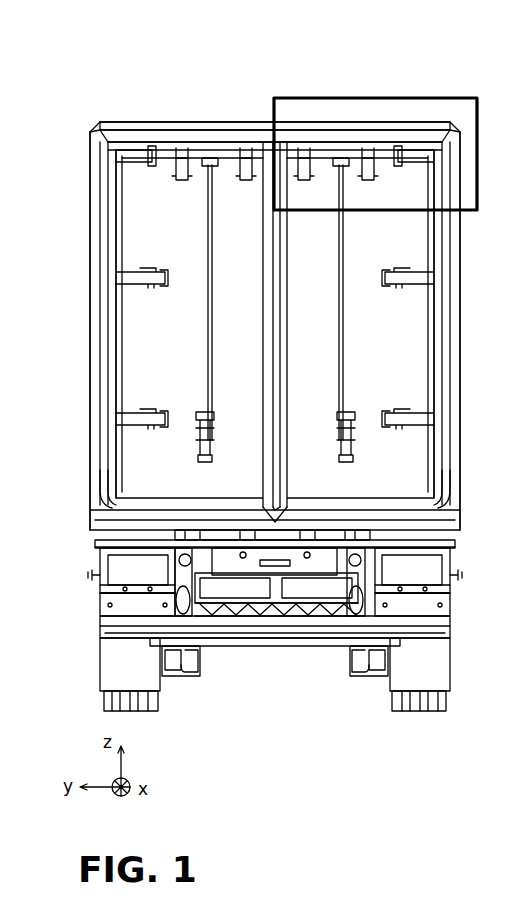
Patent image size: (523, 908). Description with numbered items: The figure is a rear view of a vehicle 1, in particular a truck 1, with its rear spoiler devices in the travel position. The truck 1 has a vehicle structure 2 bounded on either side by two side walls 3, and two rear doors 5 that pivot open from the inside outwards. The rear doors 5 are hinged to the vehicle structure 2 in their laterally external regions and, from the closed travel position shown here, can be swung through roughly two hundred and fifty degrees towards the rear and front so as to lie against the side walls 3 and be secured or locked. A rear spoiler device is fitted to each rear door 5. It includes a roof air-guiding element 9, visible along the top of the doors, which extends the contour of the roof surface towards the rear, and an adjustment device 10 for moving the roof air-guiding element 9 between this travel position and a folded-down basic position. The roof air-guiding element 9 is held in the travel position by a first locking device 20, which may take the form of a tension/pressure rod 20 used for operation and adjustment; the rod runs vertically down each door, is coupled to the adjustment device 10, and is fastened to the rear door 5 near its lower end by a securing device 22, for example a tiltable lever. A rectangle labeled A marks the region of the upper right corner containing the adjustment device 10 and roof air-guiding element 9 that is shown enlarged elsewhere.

The vehicle 1 is at (150, 128).
The roof air-guiding element 9 is at (205, 130).
The detail region A is at (375, 142).
The adjustment device 10 is at (180, 172).
The first locking device 20 is at (208, 335).
The rear door 5 is at (150, 447).
The securing device 22 is at (202, 452).
The side wall 3 is at (95, 511).
The vehicle structure 2 is at (420, 515).